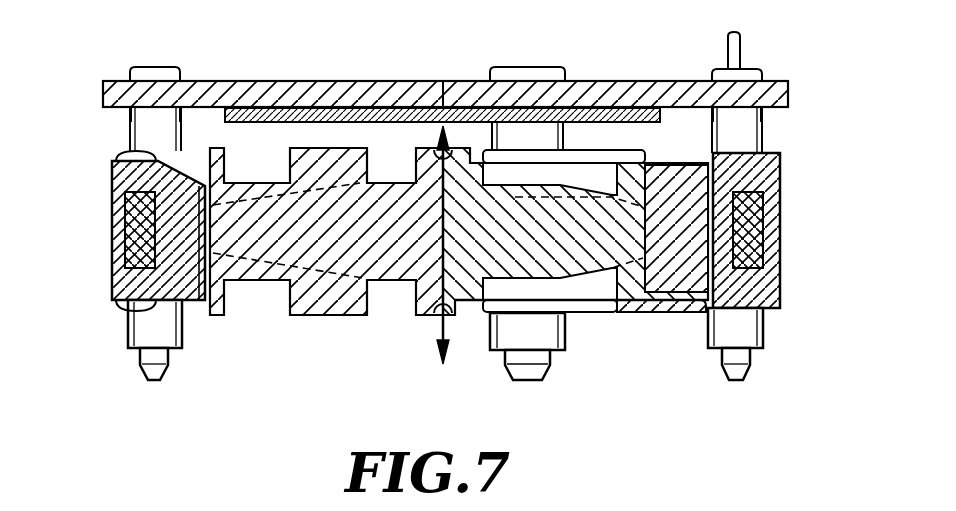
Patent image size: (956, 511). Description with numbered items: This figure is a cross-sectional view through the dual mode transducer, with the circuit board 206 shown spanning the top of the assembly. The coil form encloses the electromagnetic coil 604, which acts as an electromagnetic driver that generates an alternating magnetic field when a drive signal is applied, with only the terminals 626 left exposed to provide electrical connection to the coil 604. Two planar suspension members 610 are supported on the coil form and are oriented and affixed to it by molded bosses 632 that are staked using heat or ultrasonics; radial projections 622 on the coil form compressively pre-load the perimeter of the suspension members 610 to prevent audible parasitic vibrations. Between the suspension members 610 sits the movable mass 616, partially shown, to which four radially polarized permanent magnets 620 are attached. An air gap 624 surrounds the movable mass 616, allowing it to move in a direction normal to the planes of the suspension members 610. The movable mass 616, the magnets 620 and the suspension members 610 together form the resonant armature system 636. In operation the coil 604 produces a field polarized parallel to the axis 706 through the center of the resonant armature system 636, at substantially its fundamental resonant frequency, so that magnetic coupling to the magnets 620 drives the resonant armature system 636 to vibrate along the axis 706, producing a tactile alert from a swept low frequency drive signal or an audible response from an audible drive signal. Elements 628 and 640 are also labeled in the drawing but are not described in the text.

The circuit board 206 is at (776, 80).
The electromagnetic coil 604 is at (120, 193).
The planar suspension member 610 is at (198, 165).
The movable mass 616 is at (327, 277).
The permanent magnet 620 is at (668, 160).
The radial projection 622 is at (735, 160).
The air gap 624 is at (705, 152).
The terminal 626 is at (743, 33).
The spacer 628 is at (128, 112).
The boss 632 is at (118, 152).
The resonant armature system 636 is at (647, 300).
The thin plate 640 is at (440, 122).
The axis 706 is at (463, 300).